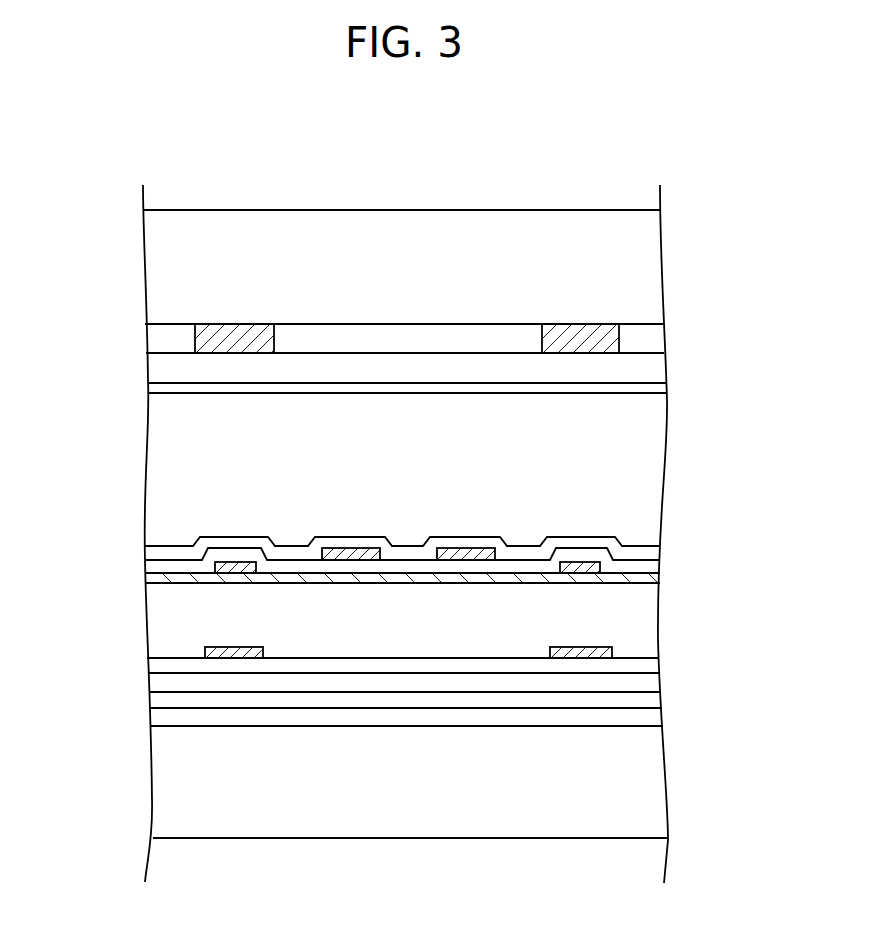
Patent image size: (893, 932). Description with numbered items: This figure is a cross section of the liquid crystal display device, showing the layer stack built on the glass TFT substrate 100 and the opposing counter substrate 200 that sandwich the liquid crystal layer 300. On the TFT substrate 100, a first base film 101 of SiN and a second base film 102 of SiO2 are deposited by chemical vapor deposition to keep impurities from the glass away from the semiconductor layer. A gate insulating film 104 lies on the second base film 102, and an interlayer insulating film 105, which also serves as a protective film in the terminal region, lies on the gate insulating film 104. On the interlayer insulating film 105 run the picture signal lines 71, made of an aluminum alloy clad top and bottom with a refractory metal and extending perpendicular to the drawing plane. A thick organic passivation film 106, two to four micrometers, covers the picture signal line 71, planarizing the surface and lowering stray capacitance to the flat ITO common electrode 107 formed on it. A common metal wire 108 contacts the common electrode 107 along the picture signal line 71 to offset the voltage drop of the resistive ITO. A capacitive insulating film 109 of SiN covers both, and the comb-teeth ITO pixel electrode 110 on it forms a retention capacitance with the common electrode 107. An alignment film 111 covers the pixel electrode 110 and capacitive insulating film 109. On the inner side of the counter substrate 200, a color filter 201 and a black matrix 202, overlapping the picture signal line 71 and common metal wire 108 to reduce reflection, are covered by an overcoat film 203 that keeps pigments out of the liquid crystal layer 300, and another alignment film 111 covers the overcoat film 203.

The counter substrate 200 is at (638, 268).
The color filter 201 is at (337, 336).
The black matrix 202 is at (232, 336).
The overcoat film 203 is at (333, 372).
The alignment film 111 is at (433, 393).
The liquid crystal layer 300 is at (642, 430).
The capacitive insulating film 109 is at (580, 557).
The common metal wire 108 is at (237, 562).
The pixel electrode 110 is at (357, 548).
The common electrode 107 is at (218, 587).
The organic passivation film 106 is at (635, 602).
The picture signal line 71 is at (605, 630).
The interlayer insulating film 105 is at (653, 665).
The gate insulating film 104 is at (655, 682).
The second base film 102 is at (657, 698).
The first base film 101 is at (660, 717).
The TFT substrate 100 is at (648, 808).